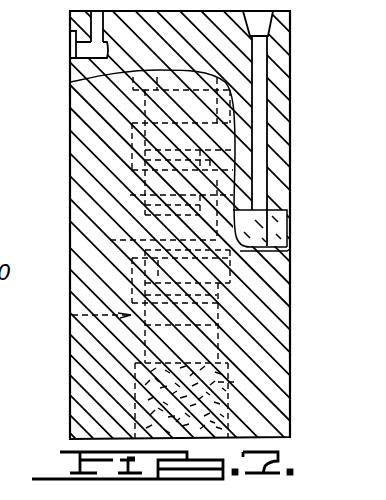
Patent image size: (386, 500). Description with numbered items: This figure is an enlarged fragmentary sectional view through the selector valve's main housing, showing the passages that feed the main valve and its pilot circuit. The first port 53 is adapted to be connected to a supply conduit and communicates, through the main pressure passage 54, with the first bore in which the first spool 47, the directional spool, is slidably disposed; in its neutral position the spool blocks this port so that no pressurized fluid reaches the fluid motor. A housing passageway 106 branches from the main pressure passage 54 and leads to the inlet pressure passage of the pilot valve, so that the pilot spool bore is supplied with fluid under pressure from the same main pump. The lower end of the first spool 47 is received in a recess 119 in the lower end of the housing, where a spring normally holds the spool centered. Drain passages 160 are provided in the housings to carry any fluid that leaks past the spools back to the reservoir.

The drain passages 160 is at (101, 53).
The housing passageway 106 is at (266, 149).
The main pressure passage 54 is at (240, 252).
The first spool 47 is at (73, 318).
The recess 119 is at (240, 395).
The first port 53 is at (260, 490).